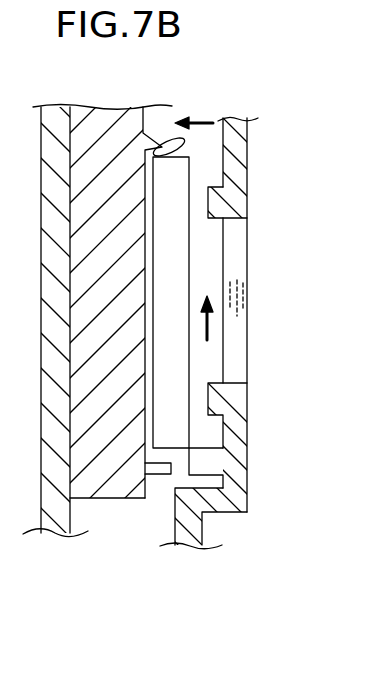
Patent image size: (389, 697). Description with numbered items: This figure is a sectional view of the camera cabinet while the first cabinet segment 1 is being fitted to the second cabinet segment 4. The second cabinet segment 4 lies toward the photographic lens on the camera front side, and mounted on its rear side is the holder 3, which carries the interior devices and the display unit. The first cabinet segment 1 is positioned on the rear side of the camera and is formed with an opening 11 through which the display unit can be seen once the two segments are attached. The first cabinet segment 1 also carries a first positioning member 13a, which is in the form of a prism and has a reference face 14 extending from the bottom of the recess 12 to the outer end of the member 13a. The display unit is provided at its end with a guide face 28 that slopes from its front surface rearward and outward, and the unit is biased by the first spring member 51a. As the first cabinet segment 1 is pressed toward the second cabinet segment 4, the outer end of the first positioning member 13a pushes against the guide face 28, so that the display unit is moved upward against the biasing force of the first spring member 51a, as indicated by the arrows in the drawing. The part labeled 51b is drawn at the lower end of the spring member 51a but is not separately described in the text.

The housing wall 1 is at (258, 148).
The inner wall 3 is at (83, 108).
The outer wall 4 is at (53, 108).
The groove 11 is at (240, 270).
The projection 12 is at (187, 447).
The bottom portion 13a is at (207, 467).
The recess 14 is at (186, 449).
The gap channel 28 is at (207, 437).
The hook portion 51a is at (165, 142).
The tab portion 51b is at (168, 467).